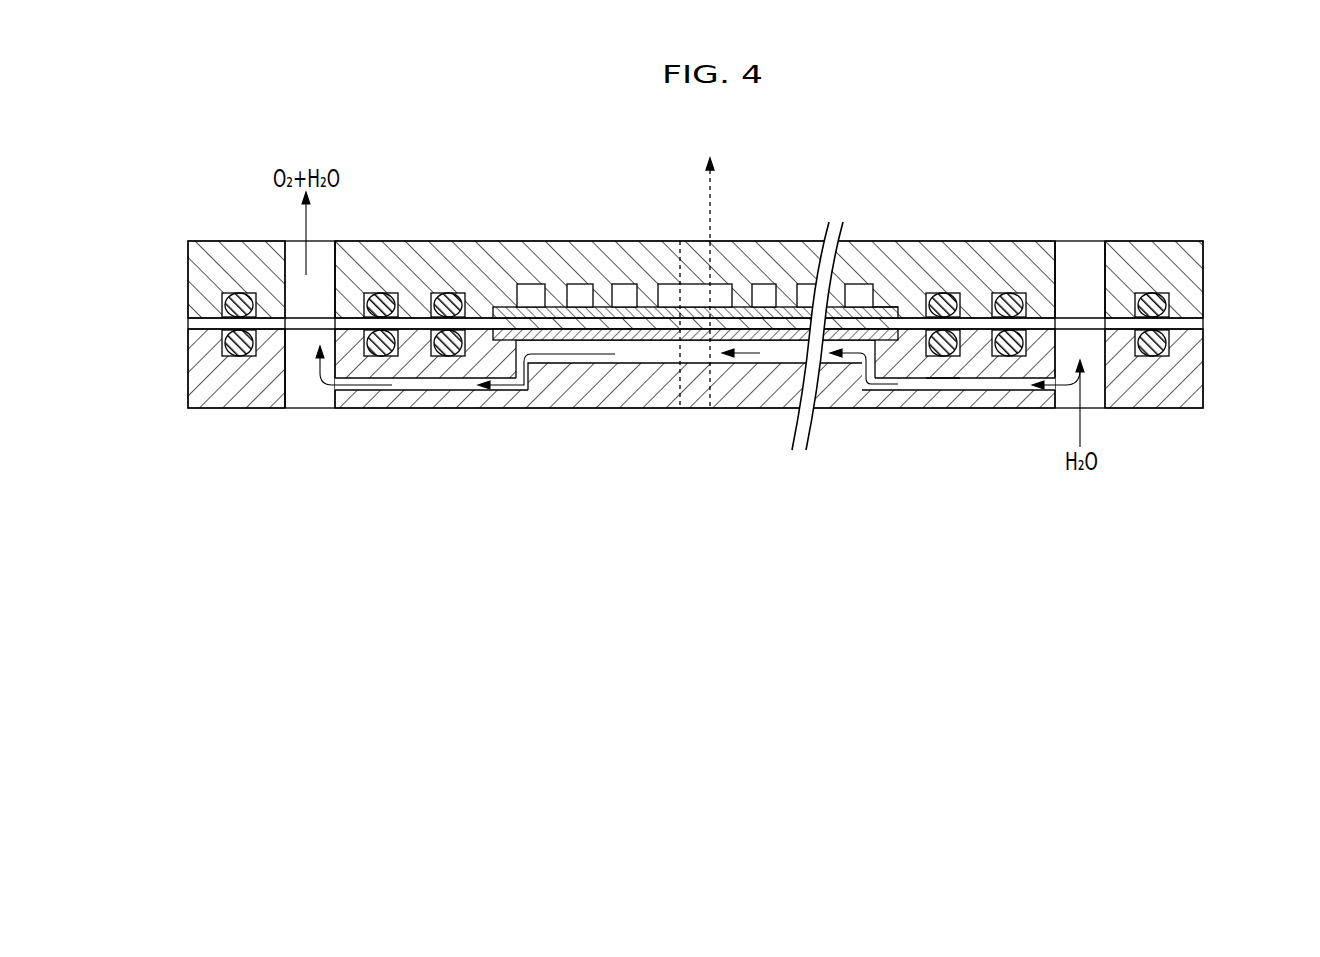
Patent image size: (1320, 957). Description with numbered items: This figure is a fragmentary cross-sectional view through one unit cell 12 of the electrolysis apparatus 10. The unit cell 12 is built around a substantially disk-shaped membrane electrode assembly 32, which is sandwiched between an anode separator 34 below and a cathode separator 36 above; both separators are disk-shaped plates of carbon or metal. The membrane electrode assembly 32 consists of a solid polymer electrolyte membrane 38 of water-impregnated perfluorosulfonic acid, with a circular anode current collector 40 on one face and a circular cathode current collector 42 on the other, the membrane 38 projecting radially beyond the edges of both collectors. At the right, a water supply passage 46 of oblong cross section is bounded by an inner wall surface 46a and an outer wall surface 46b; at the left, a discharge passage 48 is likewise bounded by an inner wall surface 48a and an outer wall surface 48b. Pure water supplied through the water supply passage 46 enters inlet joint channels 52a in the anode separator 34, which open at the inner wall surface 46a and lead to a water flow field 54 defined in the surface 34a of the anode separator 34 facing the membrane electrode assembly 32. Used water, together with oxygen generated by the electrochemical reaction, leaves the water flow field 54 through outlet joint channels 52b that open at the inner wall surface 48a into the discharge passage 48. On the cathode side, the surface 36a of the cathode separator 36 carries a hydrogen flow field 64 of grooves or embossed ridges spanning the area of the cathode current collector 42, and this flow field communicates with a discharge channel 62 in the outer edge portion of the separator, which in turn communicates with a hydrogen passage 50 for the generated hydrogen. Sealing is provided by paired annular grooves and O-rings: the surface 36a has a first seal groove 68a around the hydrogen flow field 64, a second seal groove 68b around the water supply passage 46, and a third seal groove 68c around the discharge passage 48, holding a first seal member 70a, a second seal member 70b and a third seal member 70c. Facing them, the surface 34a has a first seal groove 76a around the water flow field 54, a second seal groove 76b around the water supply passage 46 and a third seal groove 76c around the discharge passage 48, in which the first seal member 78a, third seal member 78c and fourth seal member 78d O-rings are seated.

The water electrolysis device 10 is at (1220, 111).
The unit cell 12 is at (1178, 111).
The membrane electrode assembly 32 is at (1212, 323).
The anode separator 34 is at (1218, 373).
The surface of the anode separator 34a is at (942, 356).
The cathode separator 36 is at (1205, 268).
The surface of the cathode separator 36a is at (877, 306).
The solid polymer electrolyte membrane 38 is at (1183, 345).
The anode current collector 40 is at (572, 340).
The cathode current collector 42 is at (552, 310).
The water supply passage 46 is at (1077, 263).
The inner wall surface of the water supply passage 46a is at (1064, 262).
The outer wall surface of the water supply passage 46b is at (1099, 262).
The discharge passage 48 is at (305, 395).
The inner wall surface of the discharge passage 48a is at (328, 264).
The outer wall surface of the discharge passage 48b is at (288, 392).
The hydrogen passage 50 is at (683, 262).
The inlet joint channels 52a is at (957, 390).
The outlet joint channels 52b is at (357, 390).
The water flow field 54 is at (638, 363).
The discharge channel 62 is at (693, 297).
The hydrogen flow field 64 is at (763, 297).
The first seal groove 68a is at (450, 293).
The second seal groove 68b is at (1015, 292).
The third seal groove 68c is at (238, 293).
The first seal member 70a is at (453, 299).
The second seal member 70b is at (1168, 304).
The third seal member 70c is at (224, 304).
The first seal groove 76a is at (450, 357).
The second seal groove 76b is at (1163, 355).
The third seal groove 76c is at (253, 356).
The first seal member 78a is at (443, 357).
The third seal member 78c is at (222, 340).
The fourth seal member 78d is at (1008, 356).